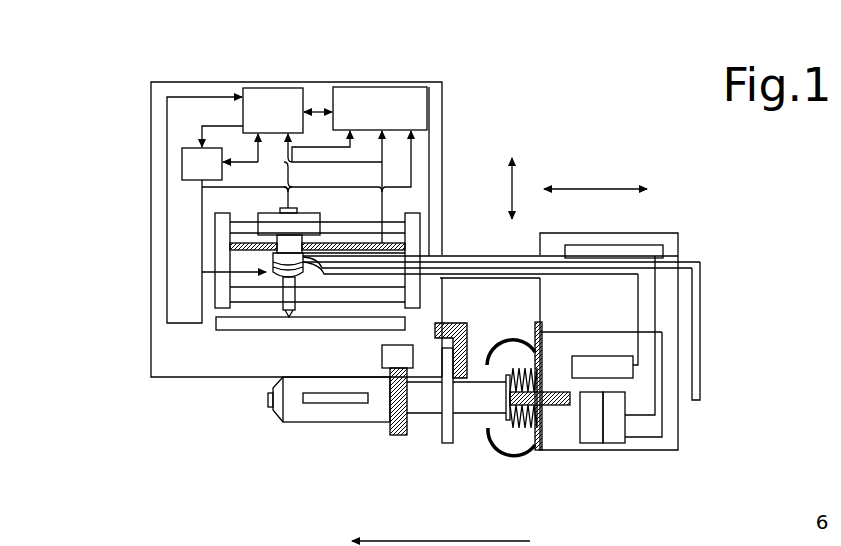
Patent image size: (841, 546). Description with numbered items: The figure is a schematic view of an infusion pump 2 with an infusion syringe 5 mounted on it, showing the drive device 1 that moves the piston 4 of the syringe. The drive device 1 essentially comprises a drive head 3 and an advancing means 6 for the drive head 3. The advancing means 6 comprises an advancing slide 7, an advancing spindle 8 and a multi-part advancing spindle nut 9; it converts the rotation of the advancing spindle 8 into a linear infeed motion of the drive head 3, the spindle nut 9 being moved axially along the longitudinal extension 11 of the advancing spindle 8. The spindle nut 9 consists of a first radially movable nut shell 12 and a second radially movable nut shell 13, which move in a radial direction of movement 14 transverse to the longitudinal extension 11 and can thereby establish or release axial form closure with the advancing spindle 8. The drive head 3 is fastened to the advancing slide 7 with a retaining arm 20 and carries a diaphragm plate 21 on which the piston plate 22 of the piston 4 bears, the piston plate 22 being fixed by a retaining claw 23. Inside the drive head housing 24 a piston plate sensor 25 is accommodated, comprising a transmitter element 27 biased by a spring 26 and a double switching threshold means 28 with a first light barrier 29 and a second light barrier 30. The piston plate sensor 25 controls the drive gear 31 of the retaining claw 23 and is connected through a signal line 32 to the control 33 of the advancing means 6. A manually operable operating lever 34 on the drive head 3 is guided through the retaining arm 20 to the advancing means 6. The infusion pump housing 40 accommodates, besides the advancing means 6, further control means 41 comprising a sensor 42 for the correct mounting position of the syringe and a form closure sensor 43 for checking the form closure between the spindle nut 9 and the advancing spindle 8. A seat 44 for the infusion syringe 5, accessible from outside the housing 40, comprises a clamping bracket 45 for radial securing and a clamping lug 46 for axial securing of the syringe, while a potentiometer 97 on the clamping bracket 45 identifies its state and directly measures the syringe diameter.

The drive device 1 is at (584, 104).
The infusion pump 2 is at (175, 444).
The drive head 3 is at (713, 219).
The piston 4 is at (462, 407).
The infusion syringe 5 is at (327, 413).
The advancing means 6 is at (188, 291).
The advancing slide 7 is at (255, 311).
The advancing spindle 8 is at (312, 217).
The multi-part advancing spindle nut 9 is at (241, 262).
The longitudinal extension 11 is at (593, 188).
The first radially movable nut shell 12 is at (278, 243).
The second radially movable nut shell 13 is at (273, 253).
The radial direction of movement 14 is at (512, 188).
The retaining arm 20 is at (475, 278).
The diaphragm plate 21 is at (529, 460).
The piston plate 22 is at (493, 445).
The retaining claw 23 is at (510, 430).
The drive head housing 24 is at (663, 229).
The piston plate sensor 25 is at (609, 475).
The spring 26 is at (548, 433).
The transmitter element 27 is at (497, 397).
The double switching threshold means 28 is at (647, 443).
The first light barrier 29 is at (593, 435).
The second light barrier 30 is at (618, 432).
The drive gear 31 is at (623, 365).
The signal line 32 is at (655, 300).
The control 33 is at (290, 272).
The operating lever 34 is at (698, 358).
The infusion pump housing 40 is at (410, 80).
The control means 41 is at (140, 143).
The sensor 42 is at (222, 328).
The form closure sensor 43 is at (393, 225).
The seat 44 is at (377, 470).
The clamping bracket 45 is at (393, 437).
The clamping lug 46 is at (460, 323).
The potentiometer 97 is at (388, 355).